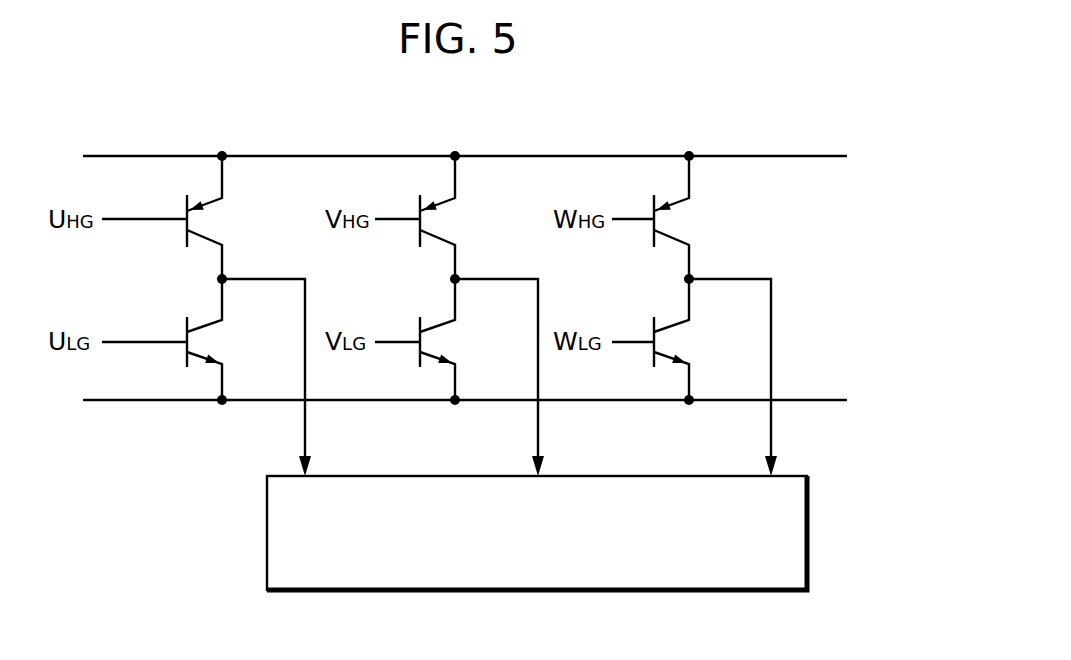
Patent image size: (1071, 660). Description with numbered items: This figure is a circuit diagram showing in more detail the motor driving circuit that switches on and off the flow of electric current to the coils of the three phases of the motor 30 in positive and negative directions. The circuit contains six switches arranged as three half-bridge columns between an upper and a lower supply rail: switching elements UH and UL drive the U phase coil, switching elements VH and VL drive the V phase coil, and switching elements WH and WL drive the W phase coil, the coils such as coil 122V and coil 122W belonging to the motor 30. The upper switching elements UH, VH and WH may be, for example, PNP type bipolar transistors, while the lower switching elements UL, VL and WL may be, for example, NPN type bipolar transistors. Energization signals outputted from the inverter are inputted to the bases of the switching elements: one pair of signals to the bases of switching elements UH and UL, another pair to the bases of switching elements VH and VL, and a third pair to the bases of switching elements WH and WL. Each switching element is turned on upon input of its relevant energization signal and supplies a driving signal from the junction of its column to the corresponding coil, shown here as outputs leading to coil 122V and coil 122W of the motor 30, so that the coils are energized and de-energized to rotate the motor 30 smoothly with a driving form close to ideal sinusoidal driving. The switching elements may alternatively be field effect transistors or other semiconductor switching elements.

The switching element UH is at (229, 220).
The switching element UL is at (229, 338).
The switching element VH is at (462, 220).
The switching element VL is at (462, 338).
The switching element WH is at (696, 220).
The switching element WL is at (696, 338).
The V phase coil 122V is at (420, 377).
The W phase coil 122W is at (774, 377).
The motor 30 is at (735, 591).